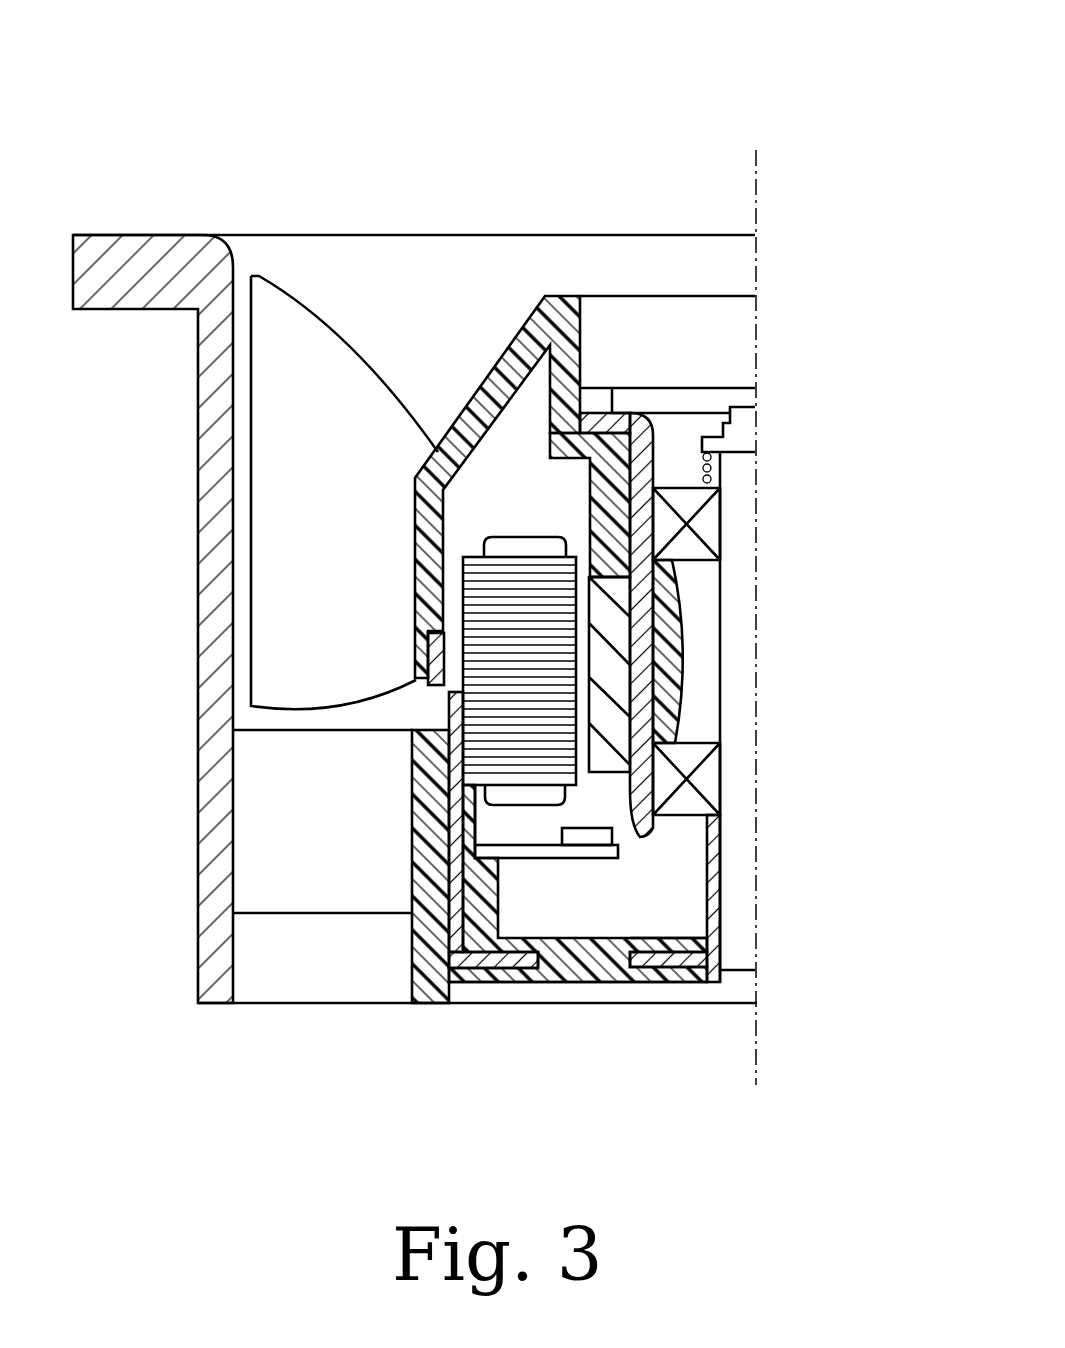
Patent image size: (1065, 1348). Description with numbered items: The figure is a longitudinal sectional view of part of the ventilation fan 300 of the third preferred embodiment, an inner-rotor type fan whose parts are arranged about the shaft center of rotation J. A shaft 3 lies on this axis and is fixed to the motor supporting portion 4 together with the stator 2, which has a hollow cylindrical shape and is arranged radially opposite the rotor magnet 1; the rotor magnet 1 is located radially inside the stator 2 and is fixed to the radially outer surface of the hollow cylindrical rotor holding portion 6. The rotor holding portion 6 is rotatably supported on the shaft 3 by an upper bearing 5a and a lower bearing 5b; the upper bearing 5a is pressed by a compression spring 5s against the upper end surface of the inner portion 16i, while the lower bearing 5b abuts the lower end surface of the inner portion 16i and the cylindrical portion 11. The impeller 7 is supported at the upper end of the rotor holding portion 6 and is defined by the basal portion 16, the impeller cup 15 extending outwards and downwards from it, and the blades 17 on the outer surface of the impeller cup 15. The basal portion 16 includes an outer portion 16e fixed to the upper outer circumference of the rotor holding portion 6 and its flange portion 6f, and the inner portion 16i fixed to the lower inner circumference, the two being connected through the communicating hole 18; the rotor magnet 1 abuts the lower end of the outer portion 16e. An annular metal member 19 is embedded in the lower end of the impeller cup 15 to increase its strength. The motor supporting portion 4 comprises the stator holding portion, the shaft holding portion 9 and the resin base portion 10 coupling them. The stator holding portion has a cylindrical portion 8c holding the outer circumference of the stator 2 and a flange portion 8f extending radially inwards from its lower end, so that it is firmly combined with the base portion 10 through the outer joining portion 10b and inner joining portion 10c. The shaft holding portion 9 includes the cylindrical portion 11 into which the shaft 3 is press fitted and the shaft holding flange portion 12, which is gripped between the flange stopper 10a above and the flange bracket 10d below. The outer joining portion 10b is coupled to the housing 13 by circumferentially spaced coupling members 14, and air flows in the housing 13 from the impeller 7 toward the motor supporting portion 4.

The ventilation fan 300 is at (702, 107).
The shaft center of rotation J is at (758, 166).
The rotor magnet 1 is at (600, 597).
The stator 2 is at (485, 628).
The shaft 3 is at (747, 413).
The motor supporting portion 4 is at (408, 1134).
The upper bearing 5a is at (710, 524).
The lower bearing 5b is at (710, 777).
The compression spring 5s is at (717, 464).
The rotor holding portion 6 is at (645, 650).
The flange portion 6f is at (598, 425).
The impeller 7 is at (320, 142).
The cylindrical portion 8c is at (453, 913).
The flange portion 8f is at (497, 963).
The shaft holding portion 9 is at (660, 1086).
The base portion 10 is at (567, 975).
The flange stopper 10a is at (658, 945).
The outer joining portion 10b is at (420, 801).
The inner joining portion 10c is at (475, 807).
The flange bracket 10d is at (660, 975).
The cylindrical portion 11 is at (718, 890).
The shaft holding flange portion 12 is at (681, 960).
The housing 13 is at (205, 823).
The coupling members 14 is at (265, 884).
The impeller cup 15 is at (478, 398).
The basal portion 16 is at (675, 191).
The outer portion 16e is at (593, 510).
The inner portion 16i is at (663, 587).
The blades 17 is at (330, 355).
The communicating hole 18 is at (597, 573).
The annular metal member 19 is at (409, 668).